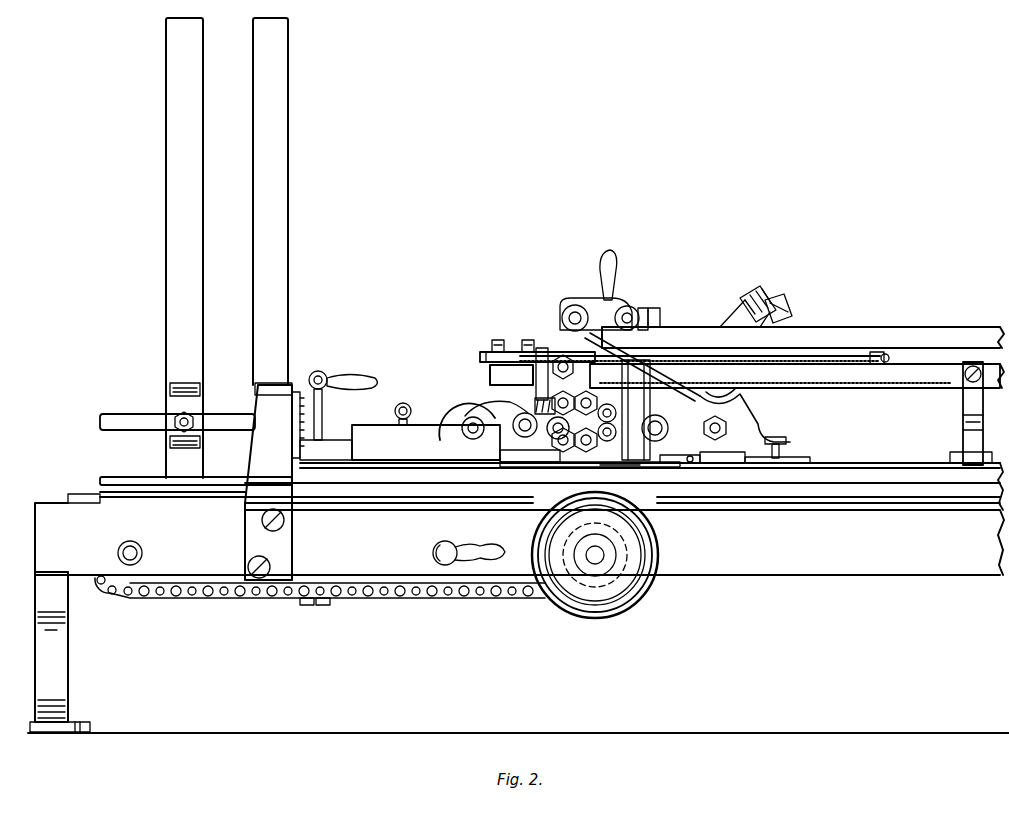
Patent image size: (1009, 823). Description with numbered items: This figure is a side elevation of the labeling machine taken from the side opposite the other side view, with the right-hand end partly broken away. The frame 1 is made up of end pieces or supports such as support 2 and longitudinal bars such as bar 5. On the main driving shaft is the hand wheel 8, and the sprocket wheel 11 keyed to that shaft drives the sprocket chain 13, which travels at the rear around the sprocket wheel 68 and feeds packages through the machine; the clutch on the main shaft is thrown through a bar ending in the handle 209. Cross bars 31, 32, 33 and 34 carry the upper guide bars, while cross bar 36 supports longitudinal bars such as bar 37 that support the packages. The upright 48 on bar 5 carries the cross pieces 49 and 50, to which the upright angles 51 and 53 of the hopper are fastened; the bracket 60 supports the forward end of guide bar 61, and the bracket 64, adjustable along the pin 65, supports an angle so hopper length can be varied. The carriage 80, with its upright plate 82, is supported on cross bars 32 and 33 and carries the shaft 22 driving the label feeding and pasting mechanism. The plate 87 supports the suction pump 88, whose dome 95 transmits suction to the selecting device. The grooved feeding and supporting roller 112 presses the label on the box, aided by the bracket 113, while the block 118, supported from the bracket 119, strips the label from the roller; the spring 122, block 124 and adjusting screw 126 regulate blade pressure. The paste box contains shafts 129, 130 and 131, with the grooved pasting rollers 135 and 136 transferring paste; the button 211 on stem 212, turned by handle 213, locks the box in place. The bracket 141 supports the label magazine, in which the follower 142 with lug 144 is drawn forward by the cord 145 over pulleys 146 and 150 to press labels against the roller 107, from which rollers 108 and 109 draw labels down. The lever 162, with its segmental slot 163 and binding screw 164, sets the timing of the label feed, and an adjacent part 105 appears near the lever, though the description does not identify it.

The frame 1 is at (38, 540).
The end piece or support 2 is at (40, 597).
The bar 5 is at (829, 568).
The hand wheel 8 is at (622, 614).
The sprocket wheel 11 is at (626, 549).
The sprocket chain 13 is at (505, 599).
The shaft 22 is at (667, 431).
The cross bar 31 is at (357, 447).
The cross bar 32 is at (505, 456).
The cross bar 33 is at (737, 456).
The cross bar 34 is at (955, 455).
The cross bar 36 is at (82, 503).
The bar 37 is at (178, 499).
The upright 48 is at (292, 535).
The cross piece 49 is at (296, 392).
The cross piece 50 is at (283, 452).
The upright angle 51 is at (288, 284).
The upright angle 53 is at (166, 271).
The bracket 60 is at (258, 385).
The guide bar 61 is at (106, 477).
The bracket 64 is at (200, 390).
The pin 65 is at (120, 418).
The sprocket wheel 68 is at (155, 597).
The carriage 80 is at (652, 320).
The upright plate 82 is at (546, 365).
The plate 87 is at (746, 407).
The suction pump 88 is at (751, 295).
The dome 95 is at (790, 308).
The lever hub 105 is at (573, 305).
The roller 107 is at (553, 371).
The roller 108 is at (535, 405).
The roller 109 is at (592, 405).
The grooved feeding and supporting roller 112 is at (618, 463).
The bracket 113 is at (552, 463).
The block 118 is at (660, 466).
The bracket 119 is at (640, 405).
The spring 122 is at (812, 460).
The block 124 is at (779, 441).
The adjusting screw 126 is at (790, 440).
The shaft 129 is at (462, 424).
The shaft 130 is at (488, 402).
The shaft 131 is at (513, 430).
The grooved pasting roller 135 is at (458, 410).
The grooved pasting roller 136 is at (490, 372).
The bracket 141 is at (963, 417).
The follower 142 is at (862, 346).
The lug 144 is at (876, 364).
The cord 145 is at (822, 361).
The pulley 146 is at (480, 352).
The pulley 150 is at (512, 340).
The lever 162 is at (609, 262).
The segmental slot 163 is at (643, 310).
The binding screw 164 is at (625, 306).
The handle 209 is at (440, 542).
The button 211 is at (327, 445).
The stem 212 is at (323, 377).
The handle 213 is at (366, 380).